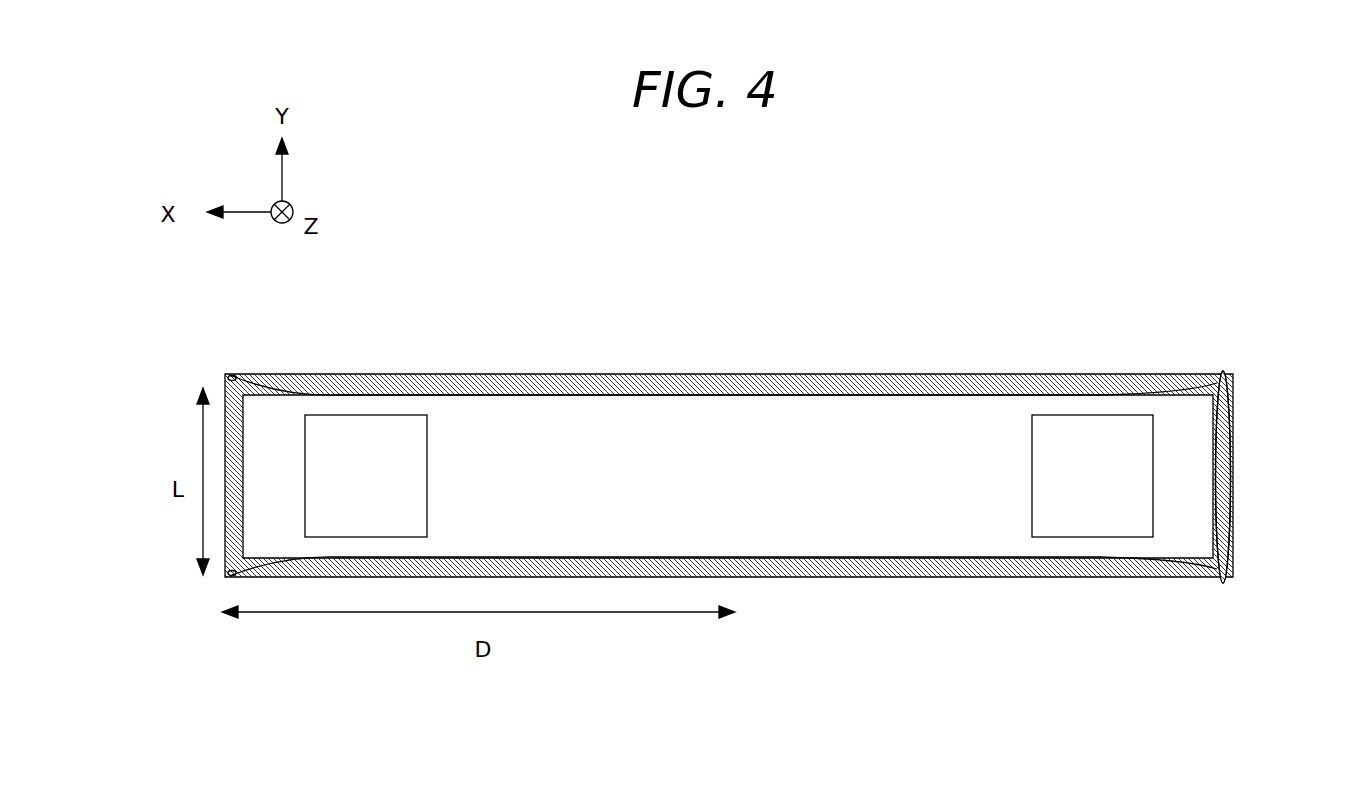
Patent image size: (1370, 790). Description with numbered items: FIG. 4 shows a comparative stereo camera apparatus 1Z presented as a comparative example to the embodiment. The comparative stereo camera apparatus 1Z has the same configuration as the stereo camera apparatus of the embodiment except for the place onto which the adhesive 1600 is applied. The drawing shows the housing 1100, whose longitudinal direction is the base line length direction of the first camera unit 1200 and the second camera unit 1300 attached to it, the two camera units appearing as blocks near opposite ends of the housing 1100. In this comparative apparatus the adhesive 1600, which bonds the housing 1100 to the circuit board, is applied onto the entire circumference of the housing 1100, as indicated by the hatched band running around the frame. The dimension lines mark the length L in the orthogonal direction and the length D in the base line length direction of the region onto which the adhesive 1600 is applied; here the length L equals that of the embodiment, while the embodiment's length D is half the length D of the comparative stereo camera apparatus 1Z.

The comparative stereo camera apparatus 1Z is at (888, 251).
The housing 1100 is at (732, 373).
The first camera unit 1200 is at (1108, 465).
The second camera unit 1300 is at (378, 465).
The adhesive 1600 is at (1232, 417).